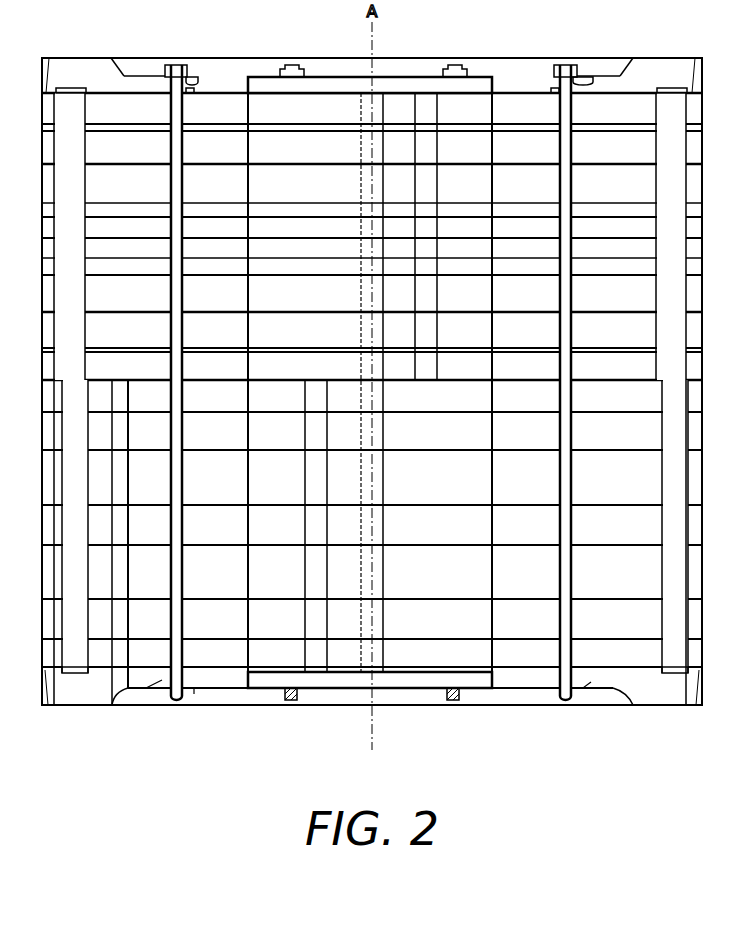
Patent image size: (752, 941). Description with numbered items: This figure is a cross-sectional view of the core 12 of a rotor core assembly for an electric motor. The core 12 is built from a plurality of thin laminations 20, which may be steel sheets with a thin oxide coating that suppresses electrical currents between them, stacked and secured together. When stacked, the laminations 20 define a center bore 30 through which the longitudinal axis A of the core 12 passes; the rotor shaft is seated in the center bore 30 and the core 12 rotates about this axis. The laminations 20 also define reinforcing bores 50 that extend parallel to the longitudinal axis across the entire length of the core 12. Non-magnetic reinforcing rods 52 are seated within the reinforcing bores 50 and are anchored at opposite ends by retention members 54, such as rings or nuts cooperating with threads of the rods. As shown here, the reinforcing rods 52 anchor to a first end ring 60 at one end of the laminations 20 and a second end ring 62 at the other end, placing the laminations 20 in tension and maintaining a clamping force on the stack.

The core 12 is at (372, 363).
The laminations 20 is at (213, 108).
The center bore 30 is at (492, 100).
The reinforcing bores 50 is at (168, 108).
The reinforcing rods 52 is at (175, 65).
The retention members 54 is at (192, 77).
The first end ring 60 is at (643, 68).
The second end ring 62 is at (648, 698).